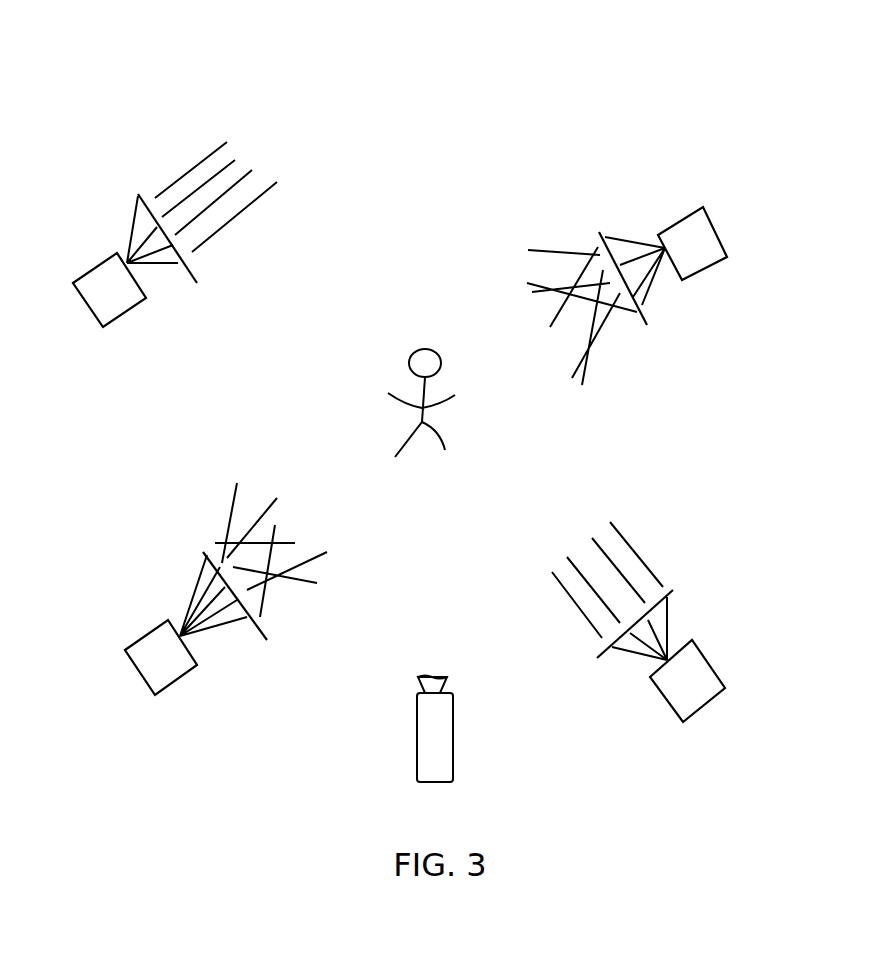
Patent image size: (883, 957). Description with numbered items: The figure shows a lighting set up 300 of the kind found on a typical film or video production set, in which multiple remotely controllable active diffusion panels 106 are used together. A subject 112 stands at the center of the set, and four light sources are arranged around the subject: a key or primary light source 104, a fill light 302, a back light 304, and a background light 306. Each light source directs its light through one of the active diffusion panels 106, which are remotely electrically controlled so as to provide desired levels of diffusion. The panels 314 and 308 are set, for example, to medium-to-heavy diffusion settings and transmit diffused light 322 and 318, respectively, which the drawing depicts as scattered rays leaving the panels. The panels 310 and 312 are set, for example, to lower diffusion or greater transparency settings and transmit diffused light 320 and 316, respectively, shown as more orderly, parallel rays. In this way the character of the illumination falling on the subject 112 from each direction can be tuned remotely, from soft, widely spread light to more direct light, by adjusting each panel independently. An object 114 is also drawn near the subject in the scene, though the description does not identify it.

The lighting set up 300 is at (758, 155).
The key light source 104 is at (175, 683).
The active diffusion panel 106 is at (188, 277).
The subject 112 is at (440, 440).
The bottle 114 is at (455, 757).
The fill light 302 is at (703, 708).
The back light 304 is at (710, 268).
The background light 306 is at (107, 327).
The diffusion panel 308 is at (608, 230).
The diffusion panel 310 is at (672, 588).
The diffusion panel 312 is at (140, 190).
The diffusion panel 314 is at (205, 547).
The diffused light 316 is at (622, 532).
The diffused light 318 is at (543, 250).
The diffused light 320 is at (192, 168).
The diffused light 322 is at (265, 500).